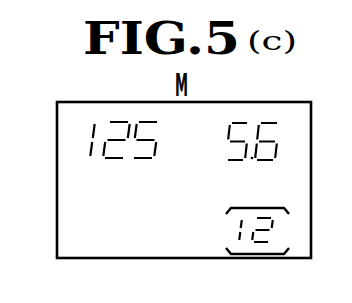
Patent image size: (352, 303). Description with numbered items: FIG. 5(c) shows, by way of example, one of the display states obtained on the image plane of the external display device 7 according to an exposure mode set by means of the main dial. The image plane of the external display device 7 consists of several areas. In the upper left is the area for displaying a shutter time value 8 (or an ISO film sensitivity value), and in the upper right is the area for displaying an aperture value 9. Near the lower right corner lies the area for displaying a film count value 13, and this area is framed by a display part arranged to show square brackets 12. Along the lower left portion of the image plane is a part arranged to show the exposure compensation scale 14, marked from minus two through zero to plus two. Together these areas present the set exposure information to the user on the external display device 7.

The external display device 7 is at (57, 122).
The shutter time value 8 is at (82, 155).
The aperture value 9 is at (282, 128).
The square brackets 12 is at (275, 205).
The film count value 13 is at (283, 236).
The exposure compensation scale 14 is at (132, 214).